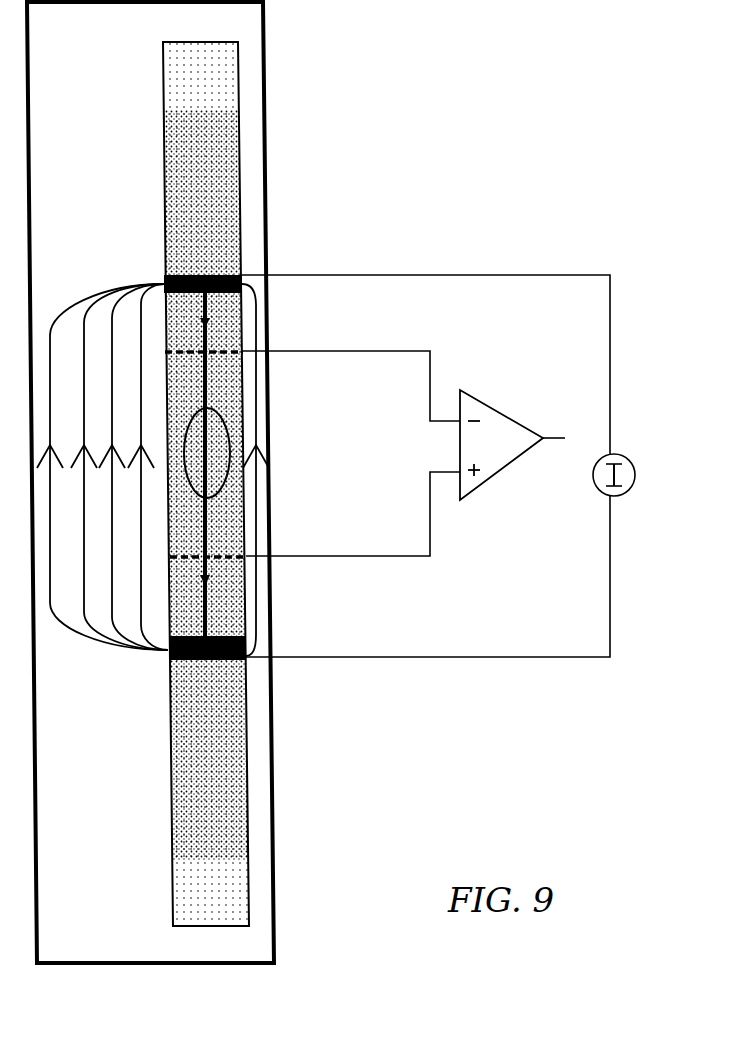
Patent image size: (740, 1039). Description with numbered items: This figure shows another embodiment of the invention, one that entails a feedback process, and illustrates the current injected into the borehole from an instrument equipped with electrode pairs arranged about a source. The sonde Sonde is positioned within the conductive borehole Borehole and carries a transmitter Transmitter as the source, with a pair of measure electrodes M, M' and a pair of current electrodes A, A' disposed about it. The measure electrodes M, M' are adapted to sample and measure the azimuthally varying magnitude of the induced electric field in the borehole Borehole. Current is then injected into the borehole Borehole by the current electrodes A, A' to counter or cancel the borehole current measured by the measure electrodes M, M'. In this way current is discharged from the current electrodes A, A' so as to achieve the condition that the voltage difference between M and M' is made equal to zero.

The borehole Borehole is at (268, 130).
The sonde Sonde is at (240, 197).
The current electrode A is at (232, 290).
The current electrode A' is at (242, 642).
The measure electrode M is at (239, 336).
The measure electrode M' is at (245, 539).
The transmitter Transmitter is at (285, 464).